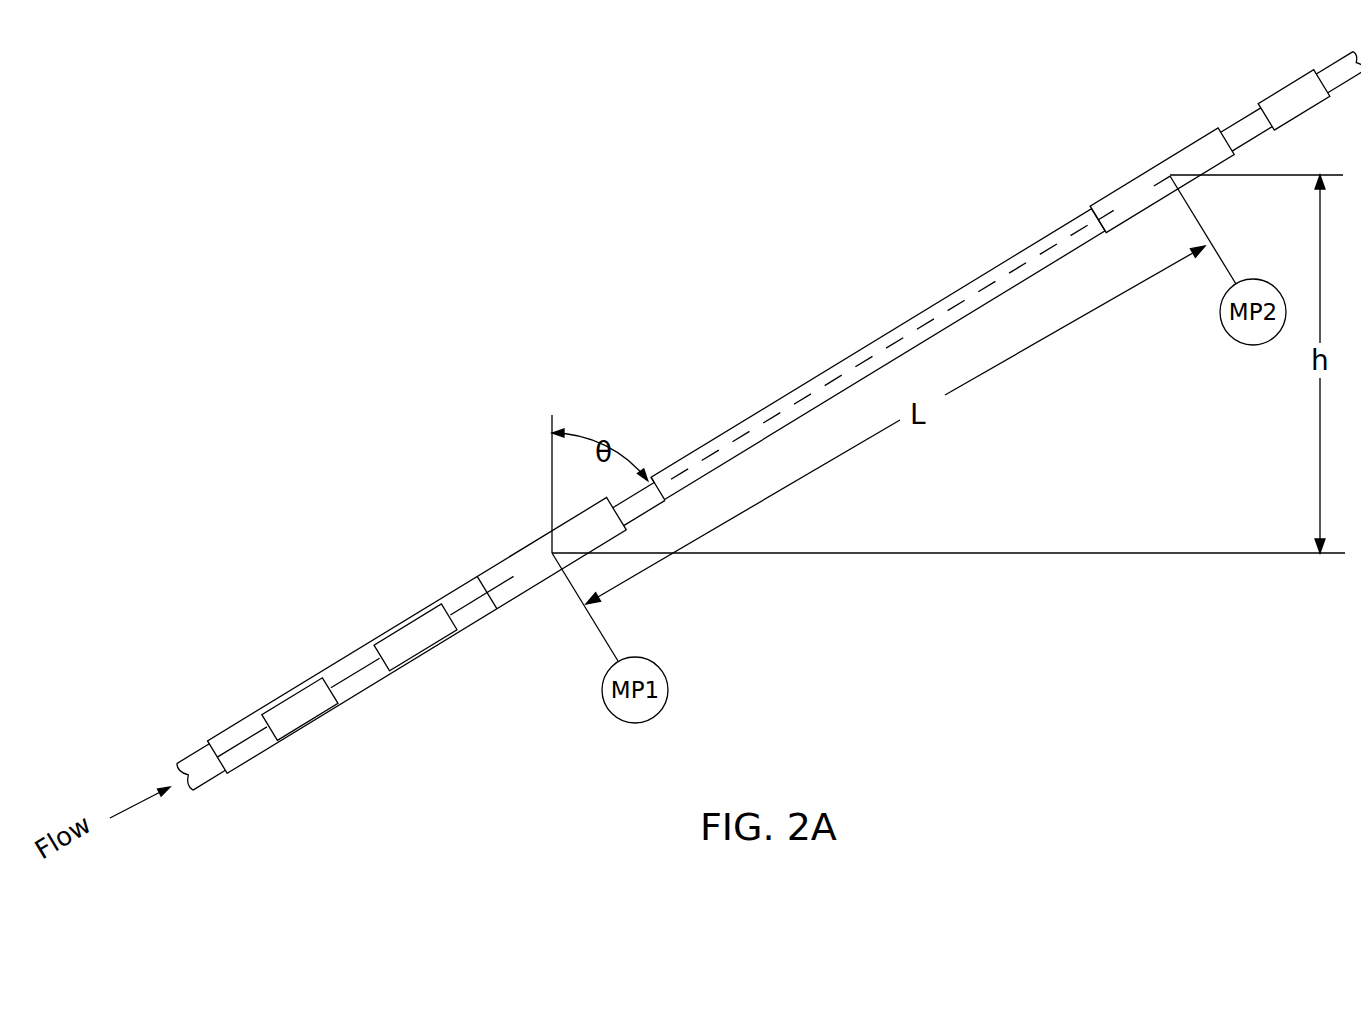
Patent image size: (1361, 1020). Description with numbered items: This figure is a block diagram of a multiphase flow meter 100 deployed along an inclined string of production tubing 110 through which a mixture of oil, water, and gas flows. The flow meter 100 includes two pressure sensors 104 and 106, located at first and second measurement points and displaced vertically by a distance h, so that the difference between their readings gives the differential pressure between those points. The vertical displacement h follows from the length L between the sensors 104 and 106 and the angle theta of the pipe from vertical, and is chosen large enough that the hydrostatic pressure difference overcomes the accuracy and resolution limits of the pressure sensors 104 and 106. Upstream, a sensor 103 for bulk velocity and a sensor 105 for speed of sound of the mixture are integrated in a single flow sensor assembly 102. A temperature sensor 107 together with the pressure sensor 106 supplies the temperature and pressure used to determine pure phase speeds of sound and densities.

The multiphase flow meter 100 is at (769, 419).
The flow sensor assembly 102 is at (370, 687).
The bulk velocity sensor 103 is at (295, 688).
The first pressure sensor 104 is at (538, 582).
The speed of sound sensor 105 is at (416, 614).
The second pressure sensor 106 is at (1150, 206).
The temperature sensor 107 is at (1294, 79).
The production tubing 110 is at (883, 336).